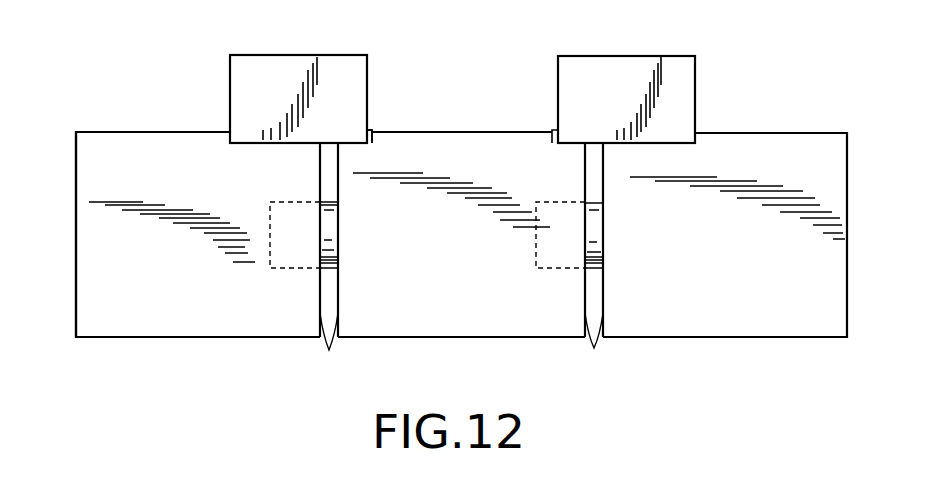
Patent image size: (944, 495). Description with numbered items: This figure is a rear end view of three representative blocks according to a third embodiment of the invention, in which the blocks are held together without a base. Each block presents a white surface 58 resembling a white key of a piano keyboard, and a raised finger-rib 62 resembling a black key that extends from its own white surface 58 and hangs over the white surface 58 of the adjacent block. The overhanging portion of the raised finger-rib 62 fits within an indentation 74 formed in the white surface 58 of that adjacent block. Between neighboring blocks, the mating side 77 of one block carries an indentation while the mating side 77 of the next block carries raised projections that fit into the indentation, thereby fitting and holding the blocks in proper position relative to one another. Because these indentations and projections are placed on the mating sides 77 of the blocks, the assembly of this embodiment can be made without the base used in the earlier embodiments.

The white surface 58 is at (112, 131).
The raised finger-rib 62 is at (277, 58).
The indentation 74 is at (370, 130).
The mating side 77 is at (462, 349).